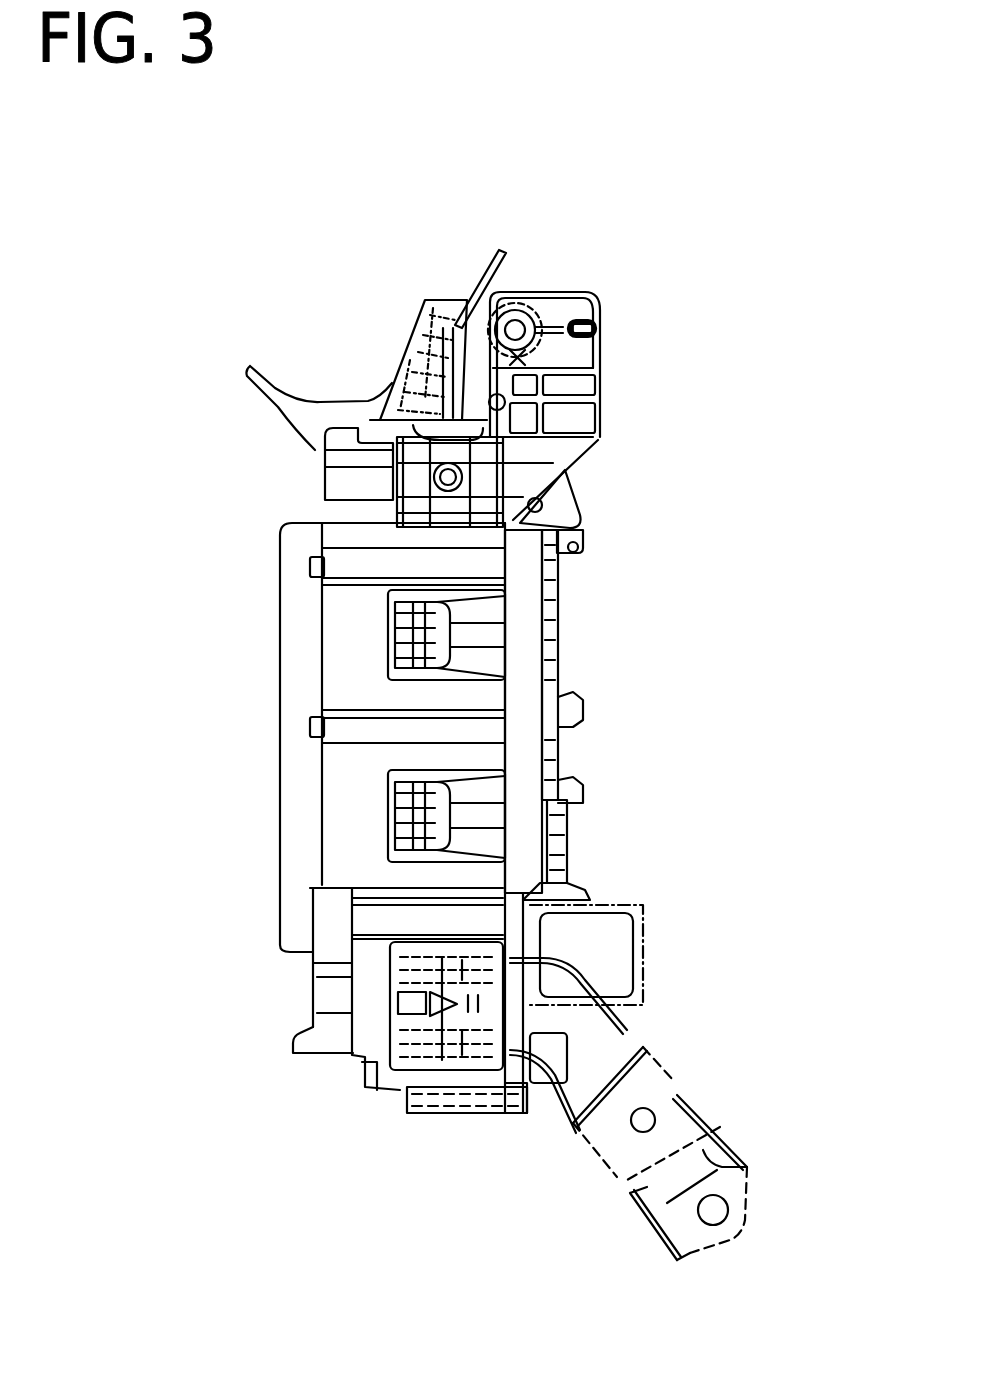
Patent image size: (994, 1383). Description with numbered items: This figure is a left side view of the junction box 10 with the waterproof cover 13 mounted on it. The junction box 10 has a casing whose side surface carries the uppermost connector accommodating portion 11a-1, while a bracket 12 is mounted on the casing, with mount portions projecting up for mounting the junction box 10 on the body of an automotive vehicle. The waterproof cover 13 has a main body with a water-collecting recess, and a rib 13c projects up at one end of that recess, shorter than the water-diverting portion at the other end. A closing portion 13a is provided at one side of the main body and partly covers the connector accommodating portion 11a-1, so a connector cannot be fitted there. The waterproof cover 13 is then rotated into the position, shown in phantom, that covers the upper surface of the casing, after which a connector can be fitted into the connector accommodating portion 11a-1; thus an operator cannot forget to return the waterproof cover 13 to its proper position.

The junction box 10 is at (555, 780).
The connector accommodating portion 11a-1 is at (597, 712).
The bracket 12 is at (607, 355).
The waterproof cover 13 is at (574, 491).
The closing portion 13a is at (583, 538).
The rib 13c is at (483, 297).